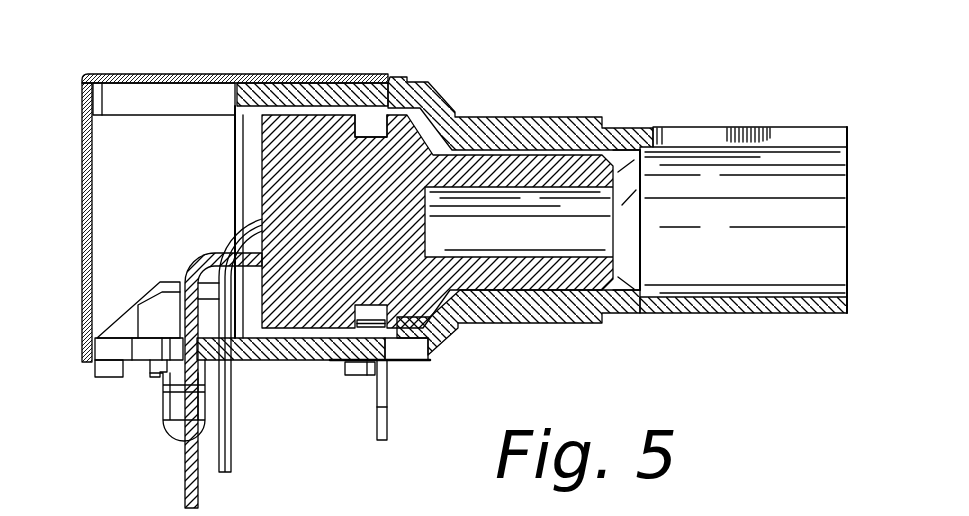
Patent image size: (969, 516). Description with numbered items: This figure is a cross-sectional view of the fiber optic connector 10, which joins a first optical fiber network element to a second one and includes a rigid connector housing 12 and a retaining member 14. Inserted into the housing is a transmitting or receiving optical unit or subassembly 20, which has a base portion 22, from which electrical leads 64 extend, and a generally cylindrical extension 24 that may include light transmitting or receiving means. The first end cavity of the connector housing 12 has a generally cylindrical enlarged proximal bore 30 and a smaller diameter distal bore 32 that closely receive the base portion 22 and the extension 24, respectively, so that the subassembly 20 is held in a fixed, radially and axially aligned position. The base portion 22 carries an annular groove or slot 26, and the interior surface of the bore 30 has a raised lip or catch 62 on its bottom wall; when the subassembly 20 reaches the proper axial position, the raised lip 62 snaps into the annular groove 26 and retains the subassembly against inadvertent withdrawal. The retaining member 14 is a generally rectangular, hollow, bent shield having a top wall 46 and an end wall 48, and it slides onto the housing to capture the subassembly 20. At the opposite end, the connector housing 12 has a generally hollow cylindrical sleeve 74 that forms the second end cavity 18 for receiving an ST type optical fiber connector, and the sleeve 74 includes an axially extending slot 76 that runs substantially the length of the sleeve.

The fiber optic connector 10 is at (582, 203).
The connector housing 12 is at (557, 117).
The retaining member 14 is at (256, 74).
The second end cavity 18 is at (806, 265).
The transmitting or receiving optical unit or subassembly 20 is at (262, 158).
The base portion 22 is at (257, 360).
The cylindrical extension 24 is at (562, 287).
The annular groove or slot 26 is at (377, 123).
The enlarged proximal portion or bore 30 is at (308, 360).
The smaller diameter distal portion or bore 32 is at (500, 308).
The top wall 46 is at (303, 78).
The end wall 48 is at (82, 277).
The raised lip or catch 62 is at (386, 326).
The electrical leads 64 is at (185, 475).
The cylindrical sleeve or extension 74 is at (753, 303).
The axially extending slot 76 is at (793, 127).